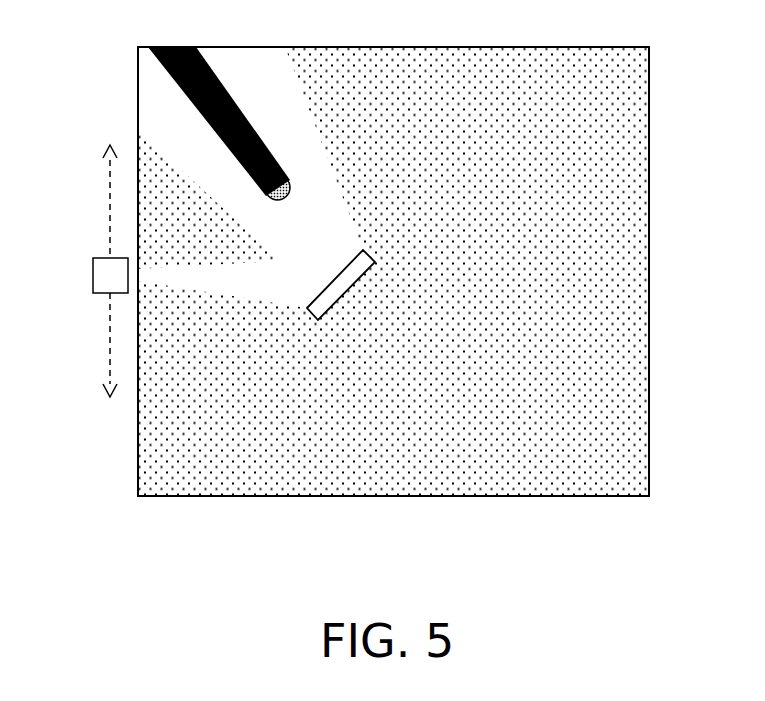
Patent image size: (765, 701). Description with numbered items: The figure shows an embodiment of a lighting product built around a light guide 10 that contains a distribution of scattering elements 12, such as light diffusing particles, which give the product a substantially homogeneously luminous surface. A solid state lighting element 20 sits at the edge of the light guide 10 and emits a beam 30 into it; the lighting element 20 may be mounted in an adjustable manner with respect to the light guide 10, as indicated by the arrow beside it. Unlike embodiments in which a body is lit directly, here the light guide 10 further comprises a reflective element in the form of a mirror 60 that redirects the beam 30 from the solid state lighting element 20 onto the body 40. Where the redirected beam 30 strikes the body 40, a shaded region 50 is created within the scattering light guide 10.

The light guide 10 is at (648, 360).
The scattering elements 12 is at (635, 455).
The solid state lighting element 20 is at (108, 273).
The beam 30 is at (310, 153).
The body 40 is at (291, 184).
The shaded region 50 is at (236, 98).
The mirror 60 is at (373, 262).